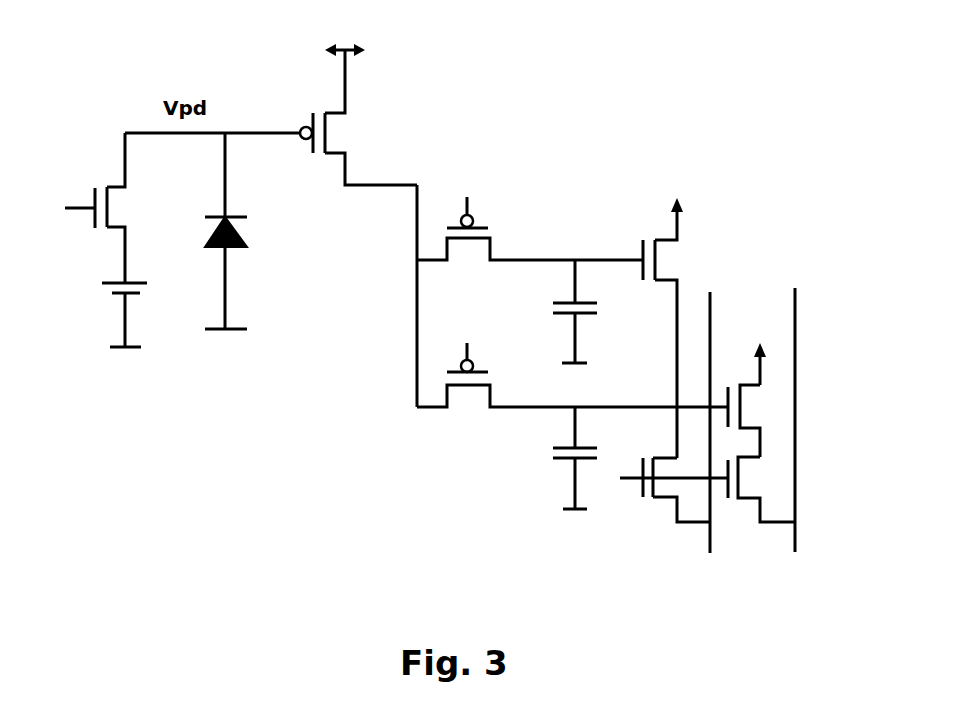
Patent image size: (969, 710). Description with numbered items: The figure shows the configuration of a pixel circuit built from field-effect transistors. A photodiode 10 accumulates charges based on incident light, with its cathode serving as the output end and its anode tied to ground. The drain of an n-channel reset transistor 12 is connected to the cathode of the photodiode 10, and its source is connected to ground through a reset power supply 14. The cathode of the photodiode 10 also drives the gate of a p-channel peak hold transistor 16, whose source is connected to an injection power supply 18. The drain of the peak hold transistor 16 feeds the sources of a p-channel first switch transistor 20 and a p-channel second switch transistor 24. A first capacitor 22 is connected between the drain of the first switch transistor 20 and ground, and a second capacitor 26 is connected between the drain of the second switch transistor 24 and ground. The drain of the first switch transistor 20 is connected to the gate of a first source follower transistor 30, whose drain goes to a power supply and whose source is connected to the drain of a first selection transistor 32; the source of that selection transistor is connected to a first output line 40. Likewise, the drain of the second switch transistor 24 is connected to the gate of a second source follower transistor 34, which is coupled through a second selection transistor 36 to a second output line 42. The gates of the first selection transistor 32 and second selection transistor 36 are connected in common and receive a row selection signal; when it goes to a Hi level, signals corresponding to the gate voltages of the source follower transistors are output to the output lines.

The photodiode 10 is at (213, 245).
The reset transistor 12 is at (88, 218).
The reset power supply 14 is at (100, 291).
The peak hold transistor 16 is at (302, 118).
The injection power supply 18 is at (363, 50).
The first switch transistor 20 is at (498, 237).
The first capacitor 22 is at (597, 308).
The second switch transistor 24 is at (480, 360).
The second capacitor 26 is at (595, 450).
The first source follower transistor 30 is at (685, 232).
The first selection transistor 32 is at (632, 488).
The second source follower transistor 34 is at (753, 407).
The second selection transistor 36 is at (762, 487).
The first output line 40 is at (710, 313).
The second output line 42 is at (798, 333).